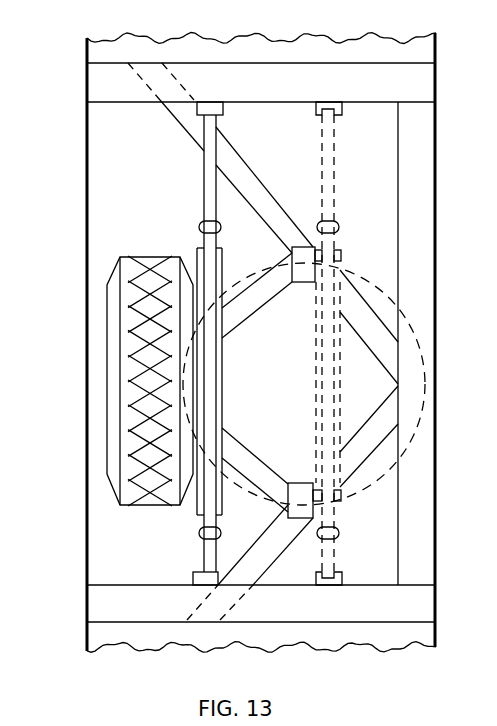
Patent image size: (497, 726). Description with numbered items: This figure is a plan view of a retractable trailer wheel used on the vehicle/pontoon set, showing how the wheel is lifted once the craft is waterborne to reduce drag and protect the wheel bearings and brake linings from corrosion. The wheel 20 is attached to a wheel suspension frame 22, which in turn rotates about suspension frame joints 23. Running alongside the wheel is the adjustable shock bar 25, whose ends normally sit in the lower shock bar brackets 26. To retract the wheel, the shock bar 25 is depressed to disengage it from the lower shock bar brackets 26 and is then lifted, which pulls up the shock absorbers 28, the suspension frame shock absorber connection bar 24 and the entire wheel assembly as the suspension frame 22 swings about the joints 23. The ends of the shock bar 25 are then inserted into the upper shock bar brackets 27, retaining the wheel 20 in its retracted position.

The wheel 20 is at (128, 401).
The wheel suspension frame 22 is at (240, 453).
The suspension frame joints 23 is at (302, 270).
The suspension frame shock absorber connection bar 24 is at (197, 254).
The adjustable shock bar 25 is at (209, 173).
The lower shock bar brackets 26 is at (199, 106).
The upper shock bar brackets 27 is at (316, 106).
The shock absorbers 28 is at (200, 222).